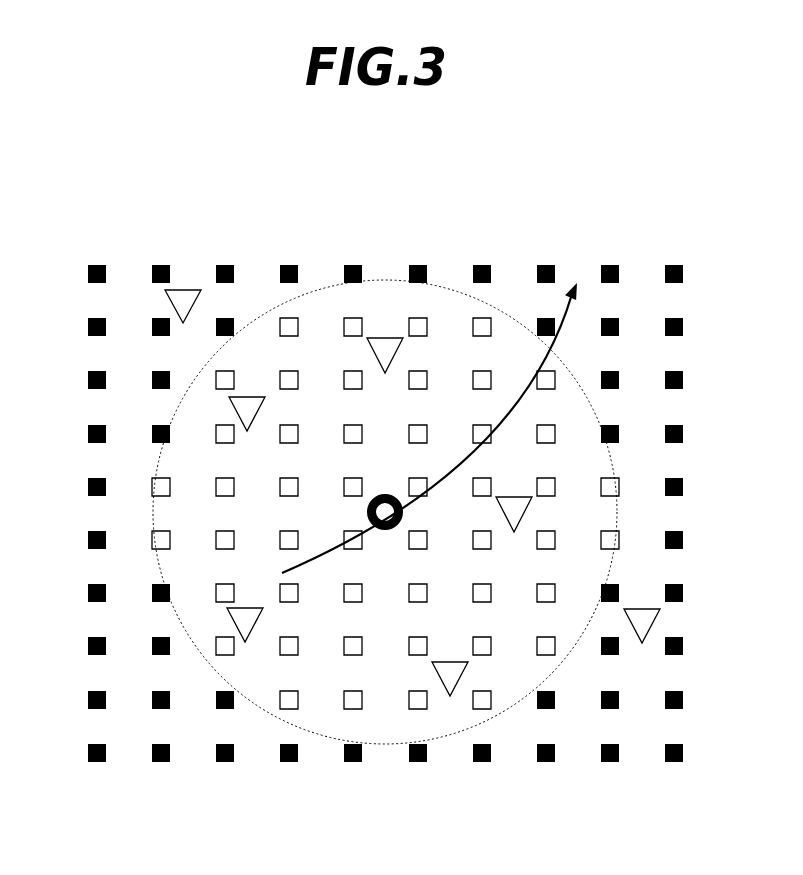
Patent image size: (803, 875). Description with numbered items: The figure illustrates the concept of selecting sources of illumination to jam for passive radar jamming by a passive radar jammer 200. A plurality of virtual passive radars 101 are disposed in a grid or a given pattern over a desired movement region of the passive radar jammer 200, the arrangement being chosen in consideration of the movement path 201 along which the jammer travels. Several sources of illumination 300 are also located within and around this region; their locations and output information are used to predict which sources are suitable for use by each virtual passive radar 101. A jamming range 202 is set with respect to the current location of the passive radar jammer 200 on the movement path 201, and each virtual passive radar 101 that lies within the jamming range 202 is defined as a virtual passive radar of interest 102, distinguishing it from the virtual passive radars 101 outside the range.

The virtual passive radar 101 is at (97, 287).
The virtual passive radar of interest 102 is at (293, 318).
The passive radar jammer 200 is at (383, 494).
The movement path 201 is at (578, 279).
The jamming range 202 is at (385, 280).
The source of illumination 300 is at (183, 290).